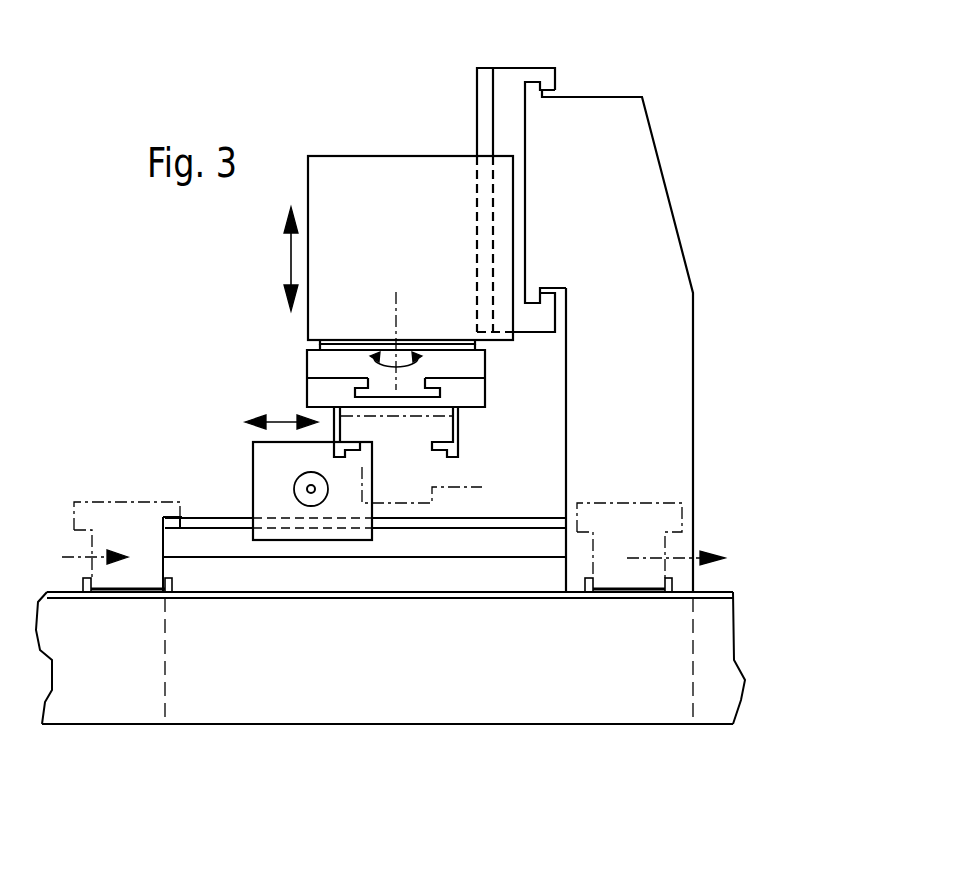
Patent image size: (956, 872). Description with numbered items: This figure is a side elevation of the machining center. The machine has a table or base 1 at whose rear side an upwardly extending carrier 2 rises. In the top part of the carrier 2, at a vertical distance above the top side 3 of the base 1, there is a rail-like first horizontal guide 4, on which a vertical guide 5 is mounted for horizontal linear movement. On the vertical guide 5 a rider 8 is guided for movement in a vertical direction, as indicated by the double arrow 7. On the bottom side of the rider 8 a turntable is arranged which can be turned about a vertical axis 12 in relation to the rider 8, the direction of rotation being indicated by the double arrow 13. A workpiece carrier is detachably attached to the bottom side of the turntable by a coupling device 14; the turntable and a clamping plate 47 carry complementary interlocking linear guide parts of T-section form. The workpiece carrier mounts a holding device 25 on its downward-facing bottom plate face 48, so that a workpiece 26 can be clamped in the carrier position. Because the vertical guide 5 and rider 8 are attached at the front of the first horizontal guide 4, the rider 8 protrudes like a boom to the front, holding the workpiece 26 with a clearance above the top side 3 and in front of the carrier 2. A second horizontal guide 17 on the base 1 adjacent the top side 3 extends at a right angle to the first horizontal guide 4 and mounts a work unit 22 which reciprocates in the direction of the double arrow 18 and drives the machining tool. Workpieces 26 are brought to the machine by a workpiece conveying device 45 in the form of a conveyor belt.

The base 1 is at (170, 568).
The carrier 2 is at (667, 393).
The top side of the base 3 is at (455, 556).
The first horizontal guide 4 is at (537, 200).
The vertical guide 5 is at (511, 88).
The double arrow 7 is at (291, 258).
The rider 8 is at (378, 166).
The vertical axis 12 is at (400, 302).
The double arrow 13 is at (425, 362).
The coupling device 14 is at (335, 388).
The second horizontal guide 17 is at (210, 532).
The double arrow 18 is at (283, 420).
The work unit 22 is at (260, 453).
The holding device 25 is at (452, 426).
The workpiece 26 is at (120, 512).
The workpiece conveying device 45 is at (110, 692).
The clamping plate 47 is at (477, 387).
The bottom plate face 48 is at (490, 420).